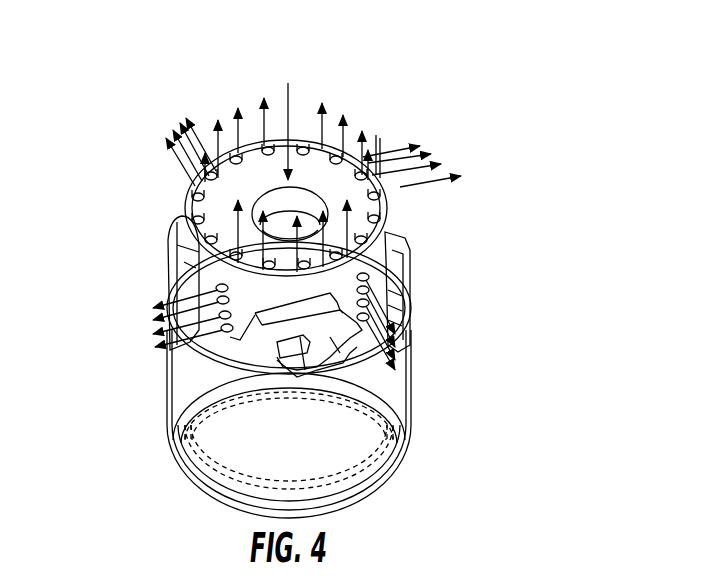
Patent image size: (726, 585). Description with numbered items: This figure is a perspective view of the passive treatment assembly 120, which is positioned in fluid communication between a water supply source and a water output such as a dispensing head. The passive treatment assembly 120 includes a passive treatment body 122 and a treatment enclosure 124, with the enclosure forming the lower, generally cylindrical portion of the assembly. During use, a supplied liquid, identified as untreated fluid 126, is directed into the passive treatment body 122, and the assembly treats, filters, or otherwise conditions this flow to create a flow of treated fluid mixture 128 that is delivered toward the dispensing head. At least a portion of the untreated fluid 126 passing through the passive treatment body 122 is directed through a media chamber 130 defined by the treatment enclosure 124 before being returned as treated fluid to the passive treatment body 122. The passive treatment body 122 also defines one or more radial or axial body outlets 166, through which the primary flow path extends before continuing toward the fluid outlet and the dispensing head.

The passive treatment assembly 120 is at (341, 289).
The passive treatment body 122 is at (400, 246).
The treatment enclosure 124 is at (282, 433).
The untreated fluid 126 is at (290, 105).
The treated fluid mixture 128 is at (401, 138).
The media chamber 130 is at (215, 472).
The body outlets 166 is at (200, 283).